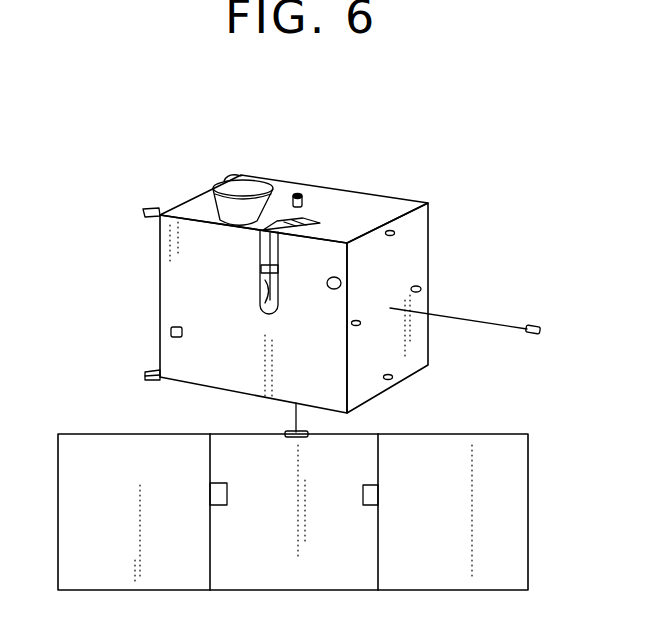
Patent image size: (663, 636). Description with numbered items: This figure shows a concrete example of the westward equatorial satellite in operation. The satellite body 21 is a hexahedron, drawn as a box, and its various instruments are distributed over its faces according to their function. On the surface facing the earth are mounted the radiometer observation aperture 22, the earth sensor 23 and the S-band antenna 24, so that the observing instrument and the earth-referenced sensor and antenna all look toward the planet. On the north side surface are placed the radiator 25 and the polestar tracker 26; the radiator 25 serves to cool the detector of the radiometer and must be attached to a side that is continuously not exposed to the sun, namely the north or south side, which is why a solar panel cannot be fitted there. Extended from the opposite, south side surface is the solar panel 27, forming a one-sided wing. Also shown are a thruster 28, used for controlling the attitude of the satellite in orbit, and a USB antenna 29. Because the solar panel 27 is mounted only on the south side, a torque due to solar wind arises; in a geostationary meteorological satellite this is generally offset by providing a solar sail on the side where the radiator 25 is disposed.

The satellite body 21 is at (367, 185).
The radiometer observation aperture 22 is at (259, 291).
The earth sensor 23 is at (170, 332).
The S-band antenna 24 is at (341, 282).
The radiator 25 is at (212, 186).
The polestar tracker 26 is at (297, 194).
The solar panel 27 is at (105, 432).
The thruster 28 is at (422, 291).
The USB antenna 29 is at (531, 337).